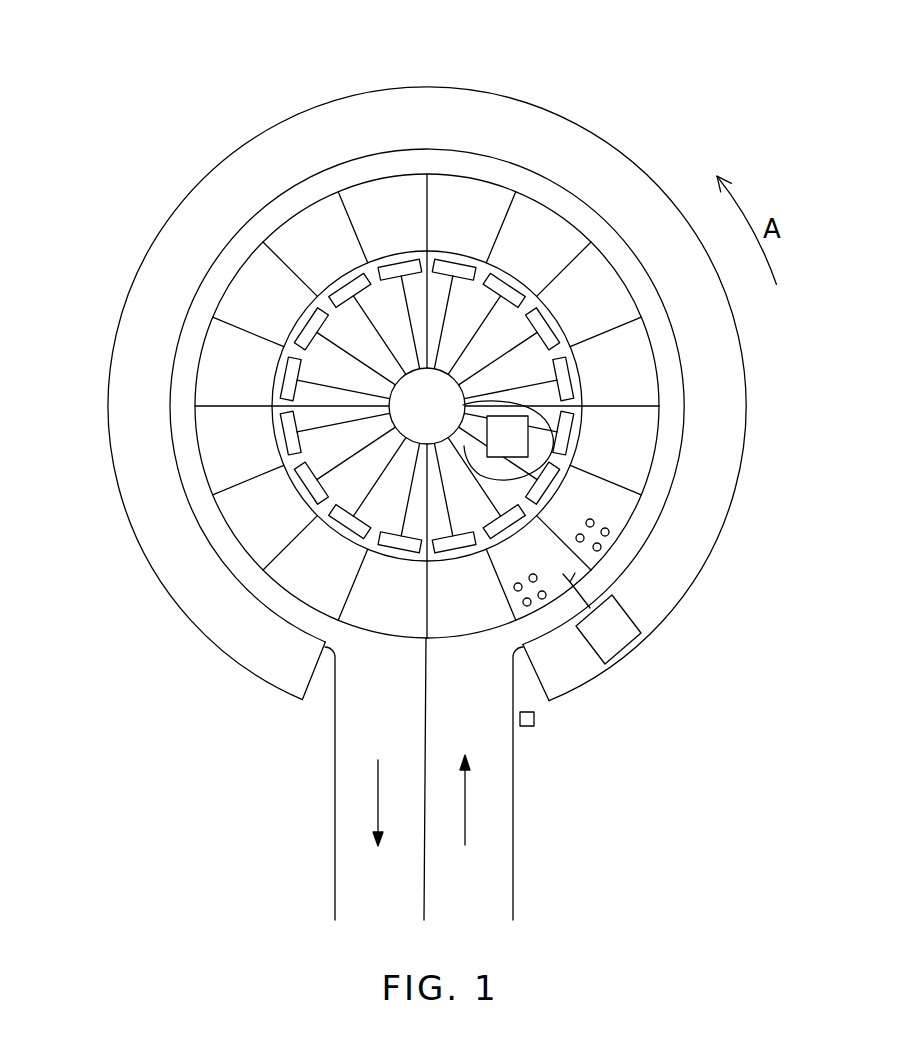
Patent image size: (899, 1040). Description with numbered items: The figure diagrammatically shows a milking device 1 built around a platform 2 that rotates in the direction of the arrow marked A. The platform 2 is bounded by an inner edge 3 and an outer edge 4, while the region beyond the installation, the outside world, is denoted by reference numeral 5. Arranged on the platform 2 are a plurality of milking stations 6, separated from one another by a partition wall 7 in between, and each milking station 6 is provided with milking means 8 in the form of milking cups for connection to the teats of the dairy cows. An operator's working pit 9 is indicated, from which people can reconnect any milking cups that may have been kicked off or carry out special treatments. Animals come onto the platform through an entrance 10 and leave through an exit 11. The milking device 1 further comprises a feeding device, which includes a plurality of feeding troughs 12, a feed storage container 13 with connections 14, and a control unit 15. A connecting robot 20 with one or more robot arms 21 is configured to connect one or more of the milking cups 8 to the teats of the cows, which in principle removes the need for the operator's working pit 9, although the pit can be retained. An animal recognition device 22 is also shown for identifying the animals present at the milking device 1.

The milking device 1 is at (758, 367).
The platform 2 is at (390, 207).
The inner edge 3 is at (556, 320).
The outer edge 4 is at (472, 177).
The outside world 5 is at (379, 326).
The milking stations 6 is at (309, 256).
The partition wall 7 is at (355, 223).
The milking means 8 is at (601, 546).
The operator's working pit 9 is at (558, 152).
The entrance 10 is at (465, 718).
The exit 11 is at (380, 718).
The feeding troughs 12 is at (288, 381).
The feed storage container 13 is at (408, 423).
The connections 14 is at (408, 488).
The control unit 15 is at (524, 453).
The connecting robot 20 is at (610, 627).
The robot arms 21 is at (582, 595).
The animal recognition device 22 is at (534, 719).